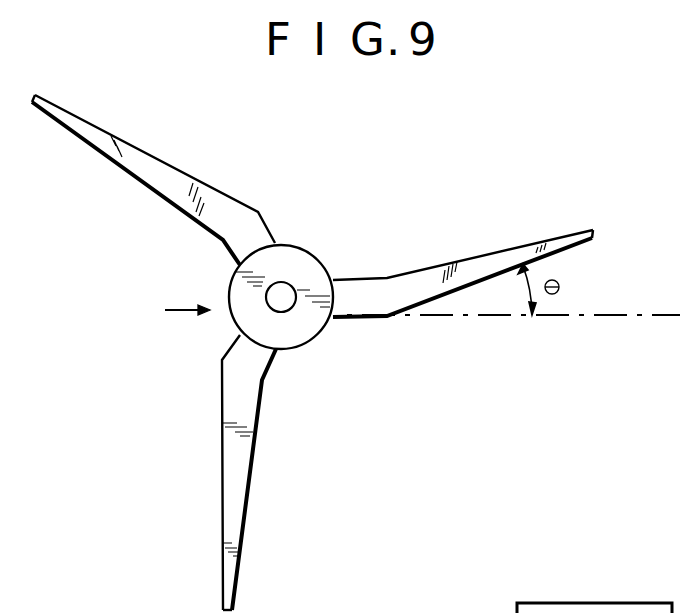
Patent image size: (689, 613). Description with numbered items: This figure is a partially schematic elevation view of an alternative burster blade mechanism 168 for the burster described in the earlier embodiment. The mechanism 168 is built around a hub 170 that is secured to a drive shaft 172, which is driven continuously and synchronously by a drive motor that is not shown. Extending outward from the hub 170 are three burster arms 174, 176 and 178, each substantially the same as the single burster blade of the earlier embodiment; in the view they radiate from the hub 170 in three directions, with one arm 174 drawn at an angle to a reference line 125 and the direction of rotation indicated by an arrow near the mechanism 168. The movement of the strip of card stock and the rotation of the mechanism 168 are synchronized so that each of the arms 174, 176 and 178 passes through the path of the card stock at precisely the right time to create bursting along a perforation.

The reference line / horizontal axis 125 is at (593, 315).
The burster blade mechanism 168 is at (158, 317).
The hub 170 is at (318, 254).
The drive shaft 172 is at (293, 306).
The burster arm 174 is at (502, 250).
The burster arm 176 is at (163, 158).
The burster arm 178 is at (245, 523).